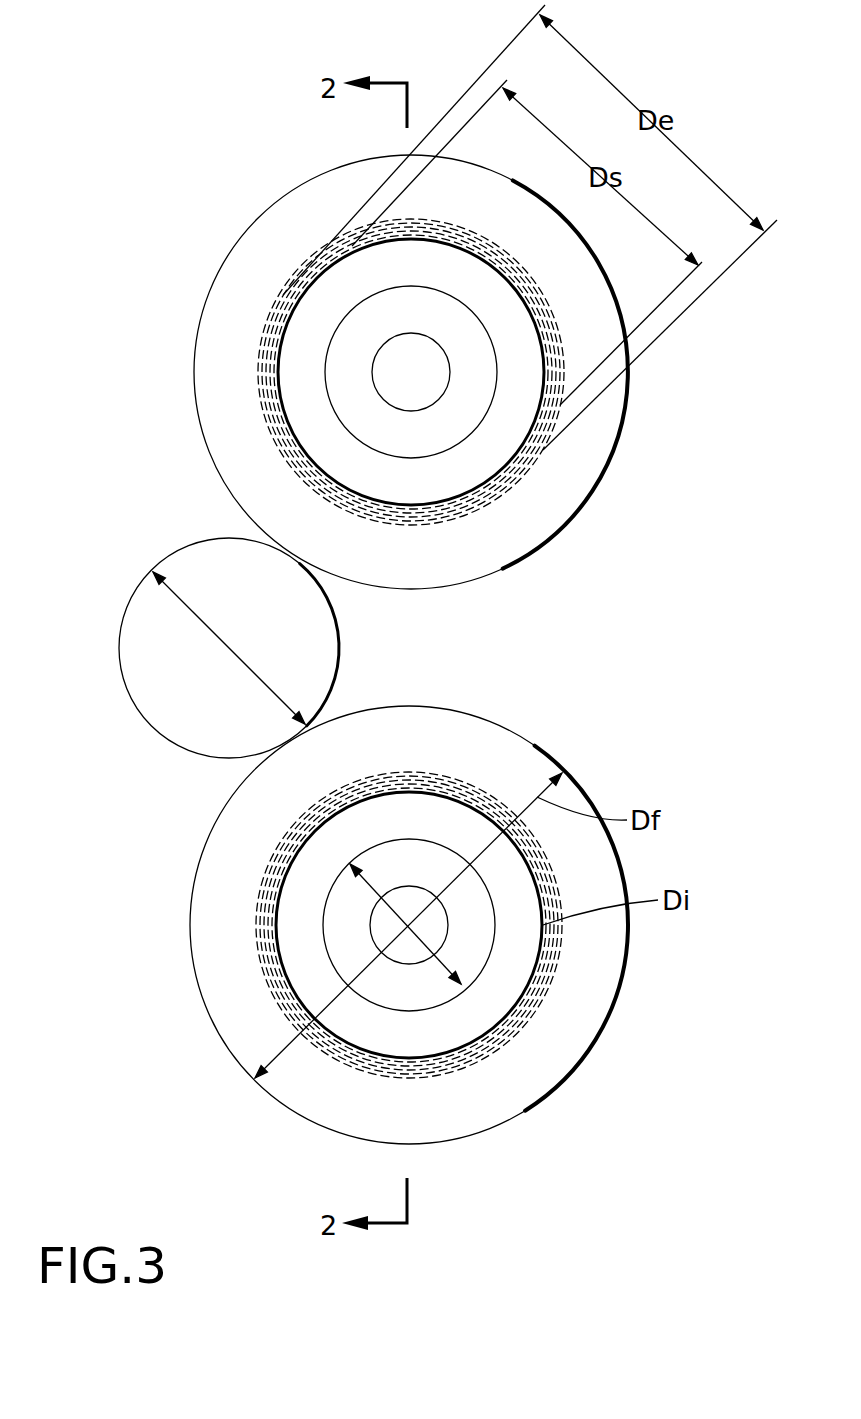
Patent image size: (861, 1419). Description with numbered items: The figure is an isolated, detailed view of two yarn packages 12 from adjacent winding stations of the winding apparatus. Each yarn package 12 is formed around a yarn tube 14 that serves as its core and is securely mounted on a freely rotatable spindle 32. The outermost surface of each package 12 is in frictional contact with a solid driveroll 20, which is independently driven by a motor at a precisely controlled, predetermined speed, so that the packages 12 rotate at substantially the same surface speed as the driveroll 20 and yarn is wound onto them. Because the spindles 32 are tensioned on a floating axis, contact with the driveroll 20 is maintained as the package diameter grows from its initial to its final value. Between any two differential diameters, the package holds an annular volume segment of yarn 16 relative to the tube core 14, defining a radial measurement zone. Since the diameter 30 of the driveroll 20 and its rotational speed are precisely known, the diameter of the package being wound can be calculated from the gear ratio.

The yarn package 12 is at (554, 510).
The yarn tube 14 is at (305, 395).
The annular volume segments of yarn 16 is at (255, 350).
The driveroll 20 is at (128, 693).
The diameter of the driveroll 30 is at (178, 600).
The spindle 32 is at (395, 366).